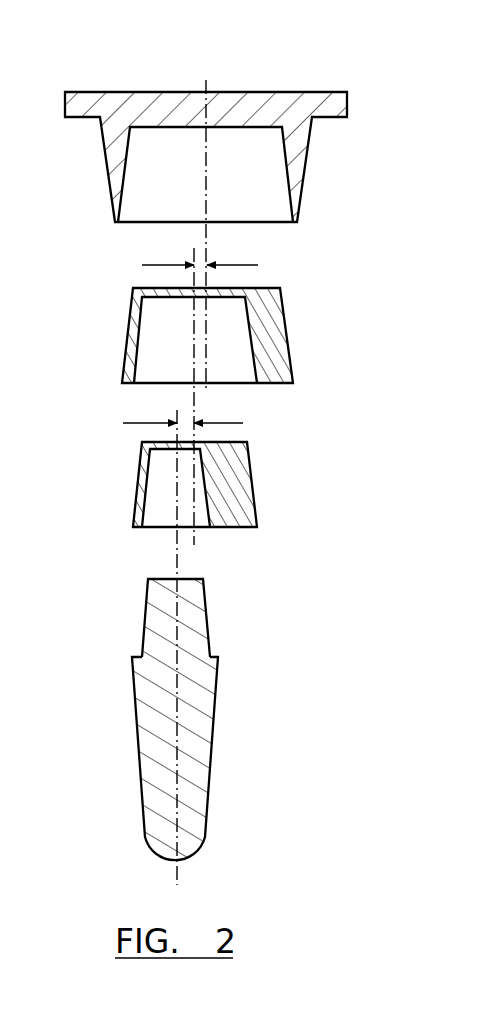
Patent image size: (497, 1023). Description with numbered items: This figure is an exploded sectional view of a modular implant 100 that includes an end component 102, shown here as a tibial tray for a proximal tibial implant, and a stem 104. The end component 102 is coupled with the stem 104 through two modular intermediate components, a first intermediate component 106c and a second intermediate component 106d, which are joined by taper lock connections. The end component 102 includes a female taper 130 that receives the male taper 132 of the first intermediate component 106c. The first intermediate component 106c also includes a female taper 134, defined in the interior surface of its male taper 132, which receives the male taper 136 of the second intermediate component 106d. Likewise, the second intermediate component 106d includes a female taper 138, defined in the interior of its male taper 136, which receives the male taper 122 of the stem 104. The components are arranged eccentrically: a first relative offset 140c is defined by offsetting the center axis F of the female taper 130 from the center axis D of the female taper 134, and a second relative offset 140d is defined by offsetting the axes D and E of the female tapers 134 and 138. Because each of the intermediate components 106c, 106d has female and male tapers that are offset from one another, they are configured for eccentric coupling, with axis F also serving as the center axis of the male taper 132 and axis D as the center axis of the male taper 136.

The modular implant 100 is at (251, 459).
The end component 102 is at (206, 134).
The stem 104 is at (214, 719).
The first intermediate component 106c is at (205, 342).
The second intermediate component 106d is at (193, 499).
The male taper 122 is at (200, 623).
The female taper 130 is at (128, 186).
The male taper 132 is at (125, 325).
The female taper 134 is at (143, 350).
The male taper 136 is at (137, 487).
The female taper 138 is at (150, 503).
The first relative offset 140c is at (228, 265).
The second relative offset 140d is at (214, 423).